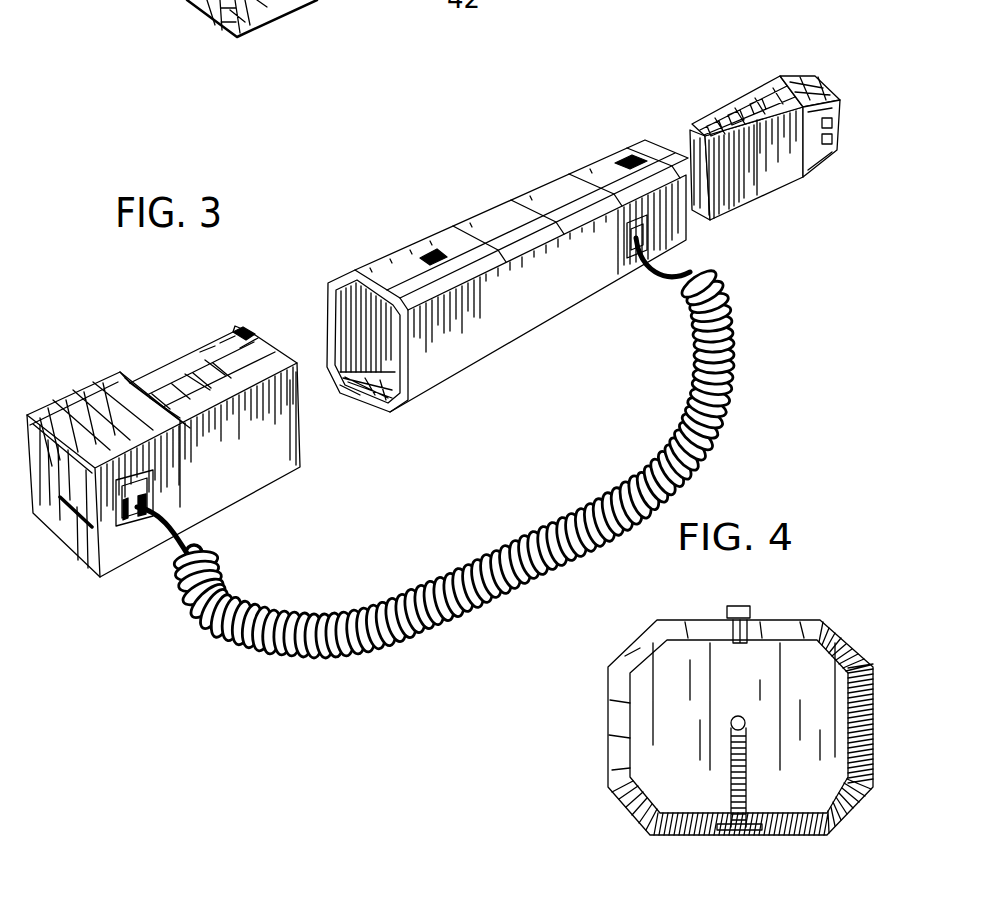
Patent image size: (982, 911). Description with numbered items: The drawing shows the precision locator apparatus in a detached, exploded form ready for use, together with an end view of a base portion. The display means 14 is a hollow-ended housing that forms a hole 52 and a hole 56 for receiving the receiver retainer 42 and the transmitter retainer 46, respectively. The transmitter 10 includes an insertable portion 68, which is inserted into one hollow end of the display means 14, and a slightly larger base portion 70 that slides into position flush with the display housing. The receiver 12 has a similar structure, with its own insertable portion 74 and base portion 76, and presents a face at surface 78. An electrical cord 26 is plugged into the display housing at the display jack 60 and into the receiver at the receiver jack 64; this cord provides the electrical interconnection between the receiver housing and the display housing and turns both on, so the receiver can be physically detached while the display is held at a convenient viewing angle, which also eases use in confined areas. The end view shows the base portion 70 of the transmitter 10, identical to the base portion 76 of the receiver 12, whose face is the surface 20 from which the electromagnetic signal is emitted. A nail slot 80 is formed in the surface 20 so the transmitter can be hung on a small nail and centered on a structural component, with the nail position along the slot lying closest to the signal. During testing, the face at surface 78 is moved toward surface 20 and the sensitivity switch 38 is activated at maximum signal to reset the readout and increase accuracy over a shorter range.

In FIG. 3, the transmitter 10 is at (751, 117).
In FIG. 4, the transmitter 10 is at (704, 731).
In FIG. 3, the receiver 12 is at (163, 442).
In FIG. 3, the display means 14 is at (538, 269).
In FIG. 4, the surface 20 is at (653, 732).
In FIG. 3, the electrical cord 26 is at (461, 575).
In FIG. 4, the sensitivity switch 38 is at (747, 610).
In FIG. 3, the receiver retainer 42 is at (176, 362).
In FIG. 3, the transmitter retainer 46 is at (733, 113).
In FIG. 3, the hole 52 is at (420, 253).
In FIG. 3, the hole 56 is at (620, 160).
In FIG. 3, the display jack 60 is at (645, 232).
In FIG. 3, the receiver jack 64 is at (143, 503).
In FIG. 3, the insertable portion 68 is at (757, 180).
In FIG. 3, the base portion 70 is at (770, 87).
In FIG. 4, the base portion 70 is at (670, 620).
In FIG. 3, the insertable portion 74 is at (233, 470).
In FIG. 3, the base portion 76 is at (88, 392).
In FIG. 3, the surface 78 is at (70, 548).
In FIG. 4, the nail slot 80 is at (738, 842).